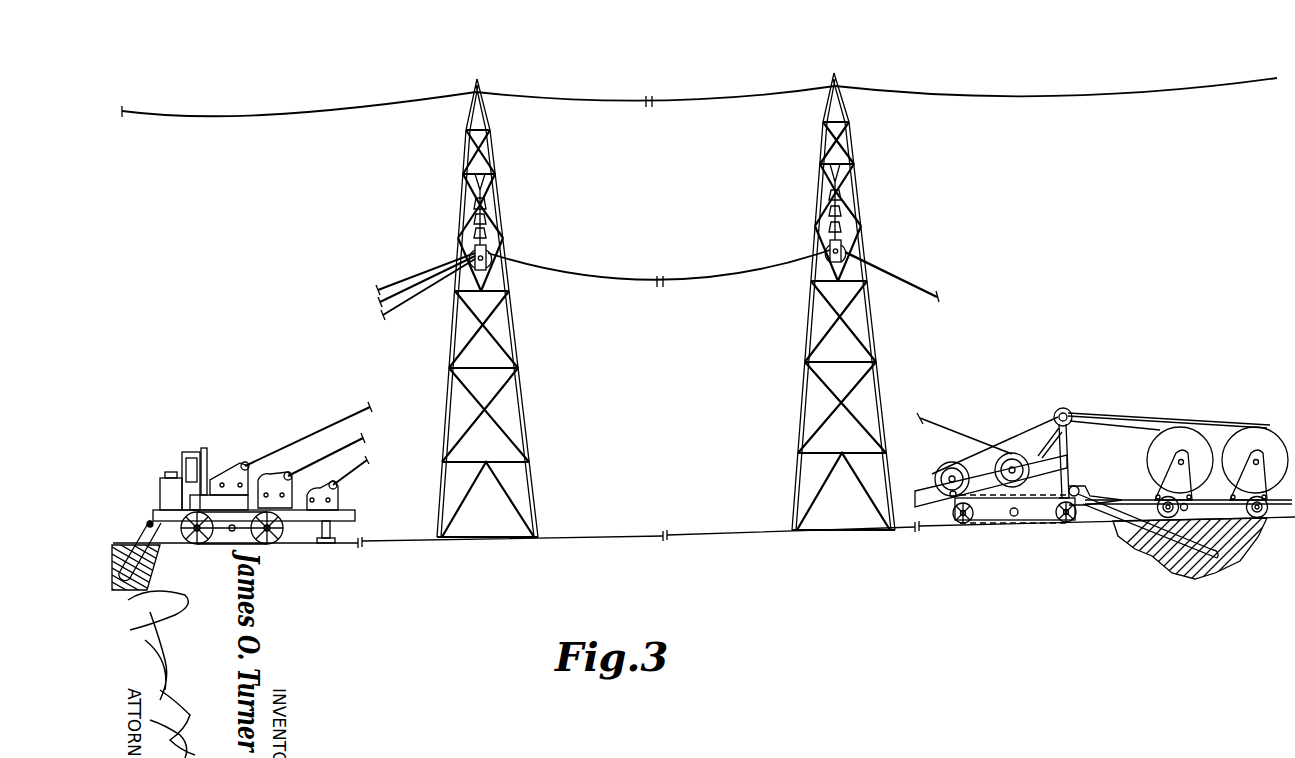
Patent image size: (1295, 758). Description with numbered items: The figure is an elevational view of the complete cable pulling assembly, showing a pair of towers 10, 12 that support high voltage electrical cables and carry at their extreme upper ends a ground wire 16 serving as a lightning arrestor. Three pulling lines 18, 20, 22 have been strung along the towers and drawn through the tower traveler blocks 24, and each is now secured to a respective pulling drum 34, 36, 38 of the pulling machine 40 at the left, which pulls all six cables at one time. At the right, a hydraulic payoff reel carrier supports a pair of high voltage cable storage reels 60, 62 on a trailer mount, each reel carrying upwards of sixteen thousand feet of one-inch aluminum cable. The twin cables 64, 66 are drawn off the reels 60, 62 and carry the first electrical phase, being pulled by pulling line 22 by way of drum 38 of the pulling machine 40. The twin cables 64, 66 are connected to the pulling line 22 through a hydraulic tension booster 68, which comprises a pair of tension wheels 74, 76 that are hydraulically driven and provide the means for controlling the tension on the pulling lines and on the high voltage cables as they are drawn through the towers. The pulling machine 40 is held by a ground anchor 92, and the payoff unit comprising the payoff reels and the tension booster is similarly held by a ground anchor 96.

The tower 10 is at (467, 150).
The tower 12 is at (822, 145).
The ground wire 16 is at (688, 98).
The pulling line 18 is at (398, 284).
The pulling line 20 is at (378, 303).
The pulling line 22 is at (400, 305).
The traveler block 24 is at (490, 258).
The pulling drum 34 is at (213, 470).
The pulling drum 36 is at (262, 473).
The pulling drum 38 is at (311, 490).
The pulling machine 40 is at (184, 452).
The payoff reel 60 is at (1152, 459).
The payoff reel 62 is at (1264, 432).
The cable 64 is at (1194, 424).
The cable 66 is at (716, 270).
The hydraulic tension booster 68 is at (1015, 411).
The tension wheel 74 is at (938, 474).
The tension wheel 76 is at (1016, 456).
The ground anchor 92 is at (126, 537).
The ground anchor 96 is at (1116, 526).